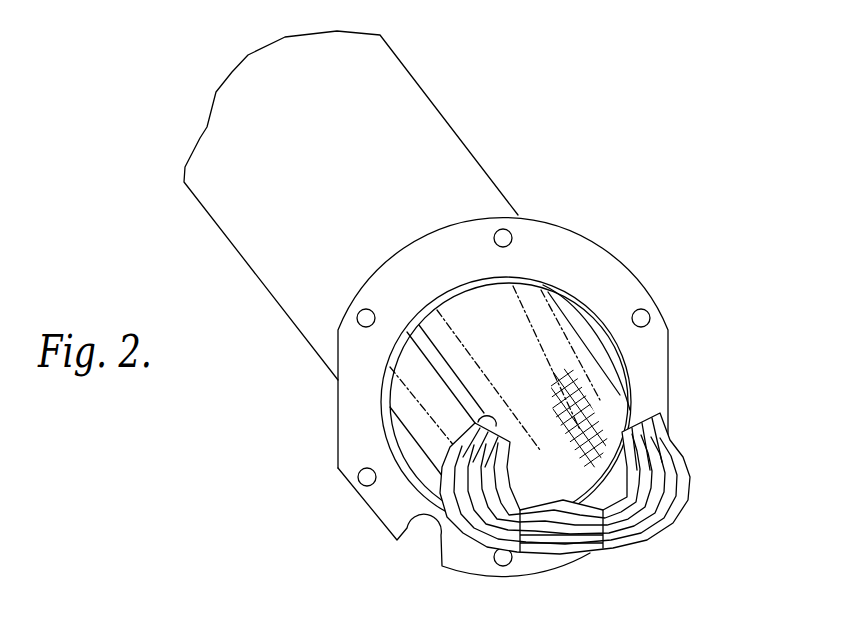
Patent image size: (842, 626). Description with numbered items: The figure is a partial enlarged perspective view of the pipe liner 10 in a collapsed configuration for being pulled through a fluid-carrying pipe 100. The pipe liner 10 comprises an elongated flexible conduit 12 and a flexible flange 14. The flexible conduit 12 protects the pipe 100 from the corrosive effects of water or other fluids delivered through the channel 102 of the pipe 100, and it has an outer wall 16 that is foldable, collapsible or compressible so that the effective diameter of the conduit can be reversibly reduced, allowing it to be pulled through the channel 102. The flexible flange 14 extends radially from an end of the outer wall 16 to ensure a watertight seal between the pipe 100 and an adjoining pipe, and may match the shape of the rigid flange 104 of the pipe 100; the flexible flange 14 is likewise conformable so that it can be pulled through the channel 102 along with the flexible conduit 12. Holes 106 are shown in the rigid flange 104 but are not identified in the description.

The fluid-carrying pipe 100 is at (217, 183).
The rigid flange 104 is at (370, 500).
The bolt holes 106 is at (515, 240).
The outer wall 16 is at (405, 388).
The elongated flexible conduit 12 is at (462, 320).
The channel 102 is at (577, 317).
The pipe liner 10 is at (625, 402).
The flexible flange 14 is at (573, 548).